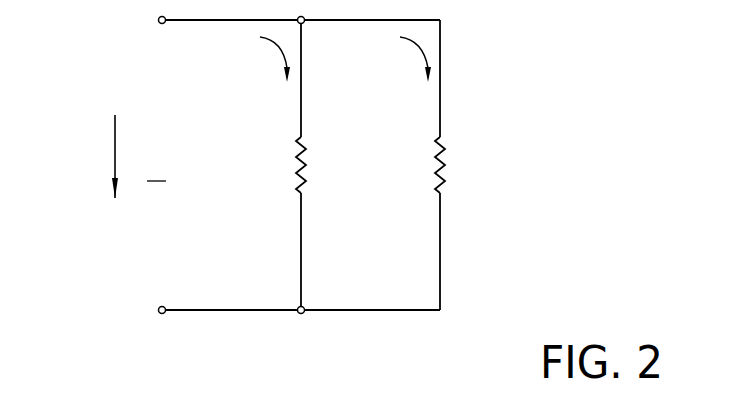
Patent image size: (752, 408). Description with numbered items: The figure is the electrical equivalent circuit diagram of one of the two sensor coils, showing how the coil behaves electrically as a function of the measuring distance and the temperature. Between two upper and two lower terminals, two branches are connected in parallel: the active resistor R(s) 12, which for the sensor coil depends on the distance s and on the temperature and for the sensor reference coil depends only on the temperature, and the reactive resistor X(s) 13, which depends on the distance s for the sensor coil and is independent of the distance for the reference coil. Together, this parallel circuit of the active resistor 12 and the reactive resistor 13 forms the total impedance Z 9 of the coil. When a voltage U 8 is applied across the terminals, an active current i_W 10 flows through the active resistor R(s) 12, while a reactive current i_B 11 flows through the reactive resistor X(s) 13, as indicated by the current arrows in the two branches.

The voltage 8 is at (78, 143).
The total impedance 9 is at (169, 168).
The active current 10 is at (249, 76).
The reactive current 11 is at (397, 72).
The active resistor 12 is at (292, 188).
The reactive resistor 13 is at (433, 190).